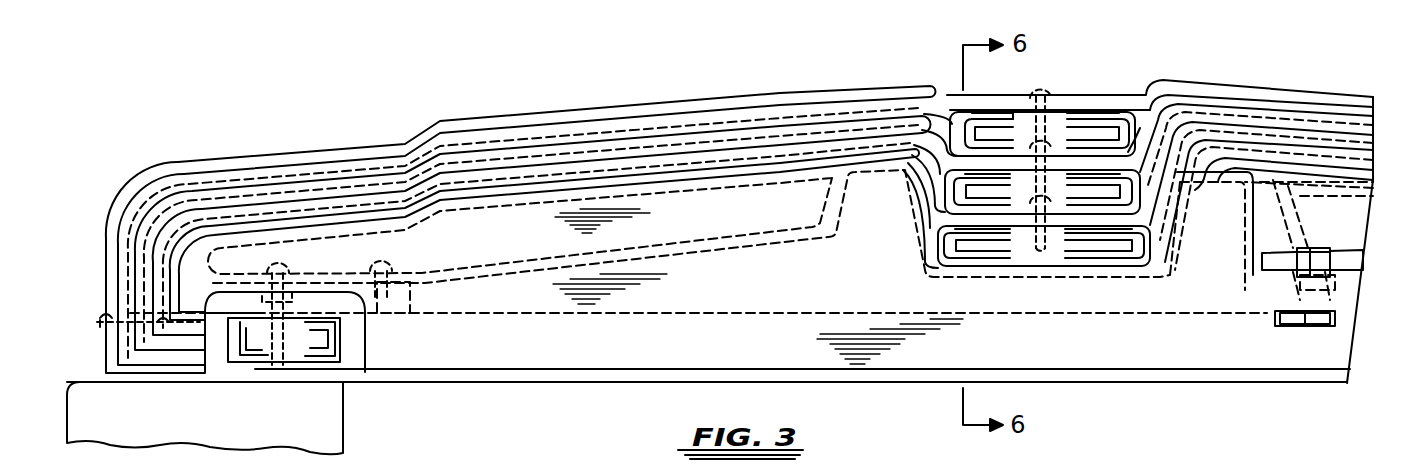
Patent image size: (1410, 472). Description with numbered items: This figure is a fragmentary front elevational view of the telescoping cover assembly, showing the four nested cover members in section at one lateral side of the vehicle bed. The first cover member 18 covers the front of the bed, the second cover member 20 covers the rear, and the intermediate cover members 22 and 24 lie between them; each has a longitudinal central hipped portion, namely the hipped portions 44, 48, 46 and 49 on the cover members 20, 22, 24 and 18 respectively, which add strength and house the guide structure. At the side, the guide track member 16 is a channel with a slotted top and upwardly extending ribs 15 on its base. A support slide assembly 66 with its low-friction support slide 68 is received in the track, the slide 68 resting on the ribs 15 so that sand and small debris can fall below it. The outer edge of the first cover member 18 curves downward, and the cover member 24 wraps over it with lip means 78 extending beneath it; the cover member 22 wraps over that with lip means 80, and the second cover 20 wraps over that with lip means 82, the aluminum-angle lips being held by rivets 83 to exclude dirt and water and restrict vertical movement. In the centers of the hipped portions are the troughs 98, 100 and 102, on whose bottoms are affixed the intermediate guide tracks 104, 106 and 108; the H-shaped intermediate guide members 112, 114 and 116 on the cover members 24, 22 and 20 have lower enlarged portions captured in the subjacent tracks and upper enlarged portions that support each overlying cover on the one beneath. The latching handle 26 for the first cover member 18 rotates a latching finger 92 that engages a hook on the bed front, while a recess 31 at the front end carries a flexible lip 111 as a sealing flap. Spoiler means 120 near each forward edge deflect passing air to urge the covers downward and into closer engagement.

The upwardly extending ribs 15 is at (347, 385).
The guide track member 16 is at (278, 378).
The first cover member 18 is at (327, 213).
The second cover member 20 is at (190, 173).
The intermediate cover member 22 is at (240, 182).
The intermediate cover member 24 is at (290, 200).
The latching handle 26 is at (1318, 248).
The front end 31 is at (605, 330).
The hipped portion 44 is at (603, 120).
The hipped portion 46 is at (703, 157).
The hipped portion 48 is at (647, 137).
The hipped portion 49 is at (758, 177).
The support slide assembly 66 is at (262, 330).
The support slide 68 is at (307, 347).
The lip means 78 is at (205, 358).
The lip means 80 is at (187, 358).
The lip means 82 is at (140, 373).
The rivets 83 is at (158, 326).
The latching finger 92 is at (1293, 318).
The trough 98 is at (1160, 238).
The trough 100 is at (1153, 178).
The trough 102 is at (947, 130).
The intermediate guide track 104 is at (1153, 268).
The intermediate guide track 106 is at (1140, 202).
The intermediate guide track 108 is at (1158, 108).
The flexible lip 111 is at (470, 378).
The intermediate guide member 112 is at (955, 250).
The intermediate guide member 114 is at (973, 195).
The intermediate guide member 116 is at (1097, 117).
The spoiler means 120 is at (537, 177).